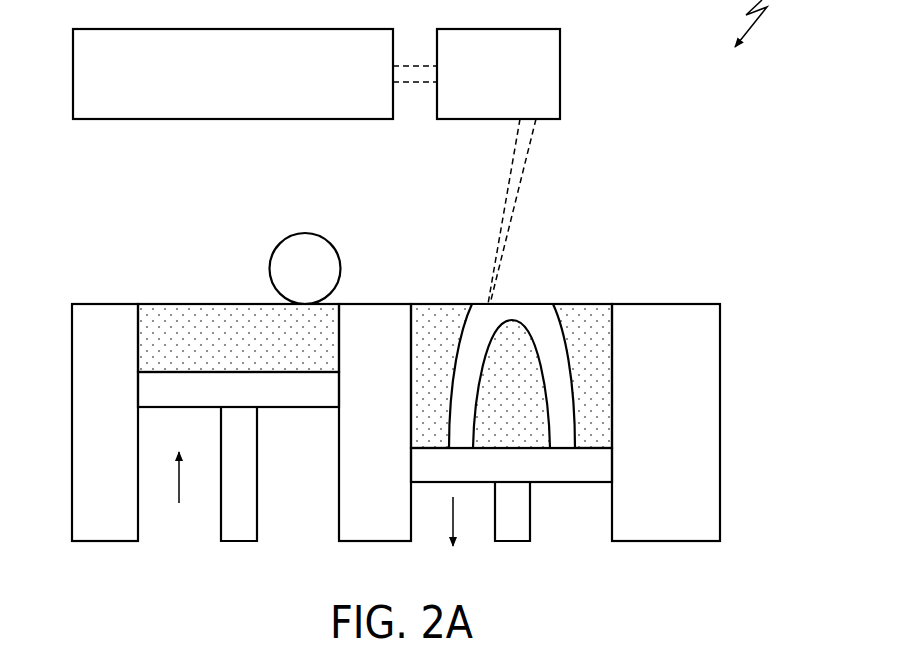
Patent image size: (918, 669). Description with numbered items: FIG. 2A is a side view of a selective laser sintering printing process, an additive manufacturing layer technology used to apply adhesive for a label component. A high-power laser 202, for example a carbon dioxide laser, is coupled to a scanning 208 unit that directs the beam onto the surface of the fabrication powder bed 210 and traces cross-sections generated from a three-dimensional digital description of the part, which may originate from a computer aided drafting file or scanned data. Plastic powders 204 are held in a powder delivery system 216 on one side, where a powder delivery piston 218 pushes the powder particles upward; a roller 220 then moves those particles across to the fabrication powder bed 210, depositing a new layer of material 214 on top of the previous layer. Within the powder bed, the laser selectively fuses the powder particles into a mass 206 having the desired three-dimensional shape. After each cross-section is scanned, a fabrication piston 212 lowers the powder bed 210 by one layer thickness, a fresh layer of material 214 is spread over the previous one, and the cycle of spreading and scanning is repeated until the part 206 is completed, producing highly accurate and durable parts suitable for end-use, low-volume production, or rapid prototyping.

The high-power laser 202 is at (93, 78).
The scanning 208 is at (549, 72).
The roller 220 is at (308, 252).
The powder delivery system 216 is at (180, 322).
The new layer of material 214 is at (337, 298).
The plastic powders 204 is at (583, 304).
The mass 206 is at (568, 417).
The fabrication powder bed 210 is at (582, 401).
The powder delivery piston 218 is at (235, 523).
The fabrication piston 212 is at (509, 523).